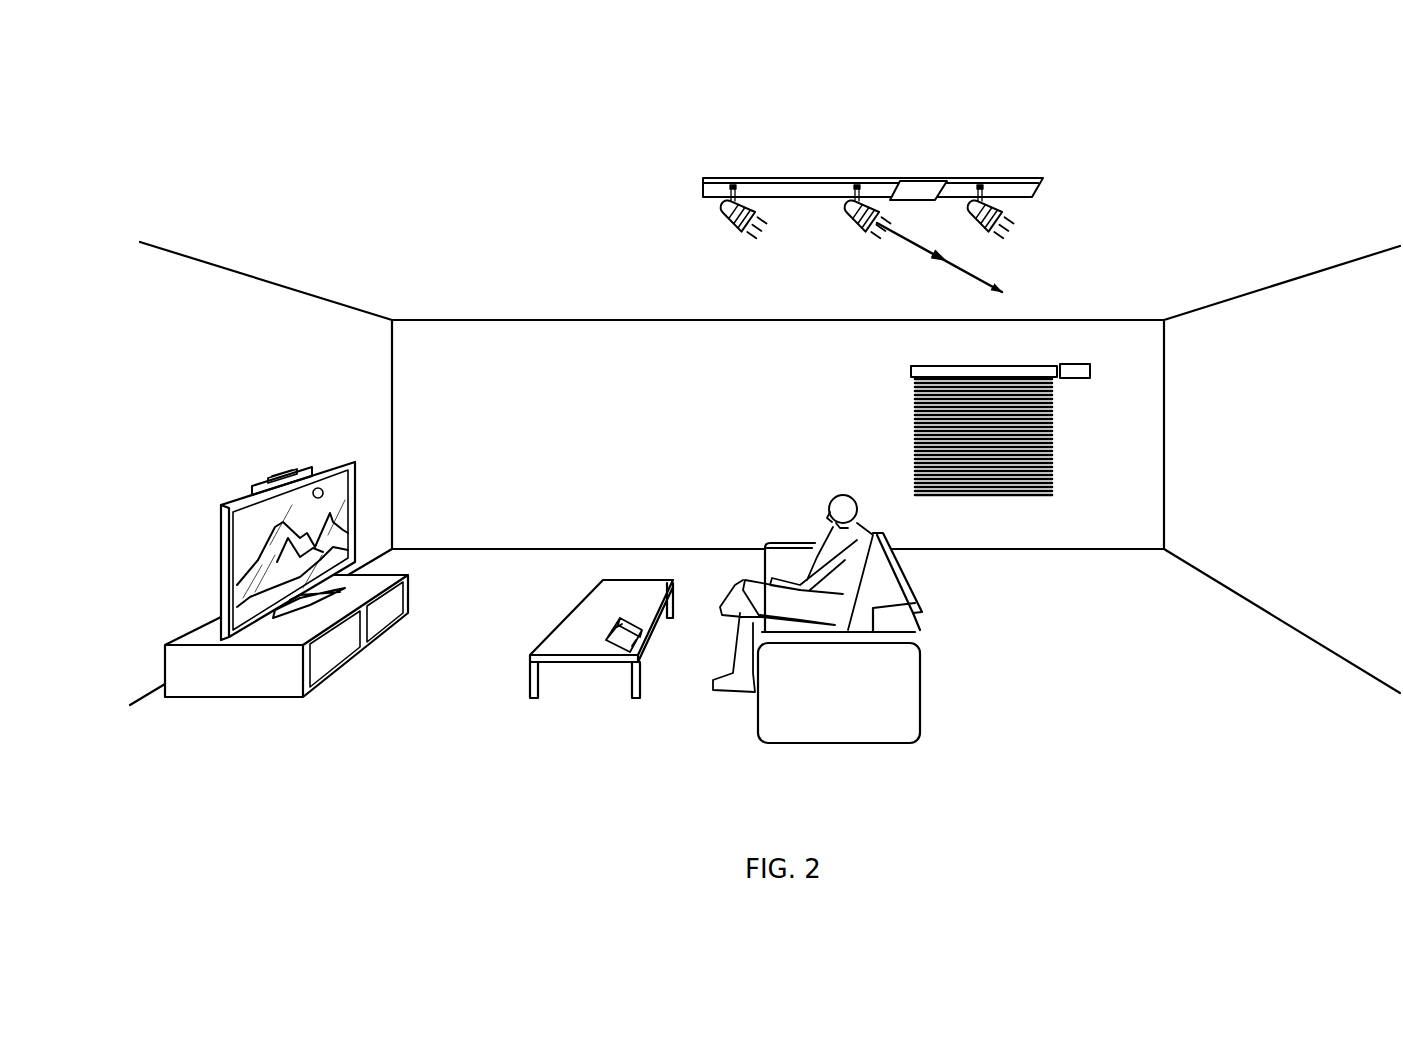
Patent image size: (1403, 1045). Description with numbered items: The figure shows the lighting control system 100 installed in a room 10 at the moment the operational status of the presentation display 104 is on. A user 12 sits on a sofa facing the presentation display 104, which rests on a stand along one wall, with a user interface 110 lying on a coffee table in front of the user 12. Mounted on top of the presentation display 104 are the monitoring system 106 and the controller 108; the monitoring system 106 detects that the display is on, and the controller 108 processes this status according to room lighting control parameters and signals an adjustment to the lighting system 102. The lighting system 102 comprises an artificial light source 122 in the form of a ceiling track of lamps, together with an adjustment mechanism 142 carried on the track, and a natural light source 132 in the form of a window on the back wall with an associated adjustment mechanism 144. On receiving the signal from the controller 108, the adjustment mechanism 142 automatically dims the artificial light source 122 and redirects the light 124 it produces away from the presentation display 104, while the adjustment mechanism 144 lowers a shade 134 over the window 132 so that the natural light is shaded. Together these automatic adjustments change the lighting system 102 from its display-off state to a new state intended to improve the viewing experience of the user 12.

The room 10 is at (380, 767).
The user 12 is at (842, 492).
The lighting control system 100 is at (522, 162).
The lighting system 102 is at (910, 167).
The presentation display 104 is at (338, 515).
The monitoring system 106 is at (262, 480).
The controller 108 is at (278, 467).
The user interface 110 is at (636, 642).
The artificial light source 122 is at (792, 178).
The light 124 is at (917, 252).
The natural light source 132 is at (1007, 434).
The shade 134 is at (1053, 410).
The adjustment mechanism 142 is at (918, 188).
The adjustment mechanism 144 is at (1093, 372).